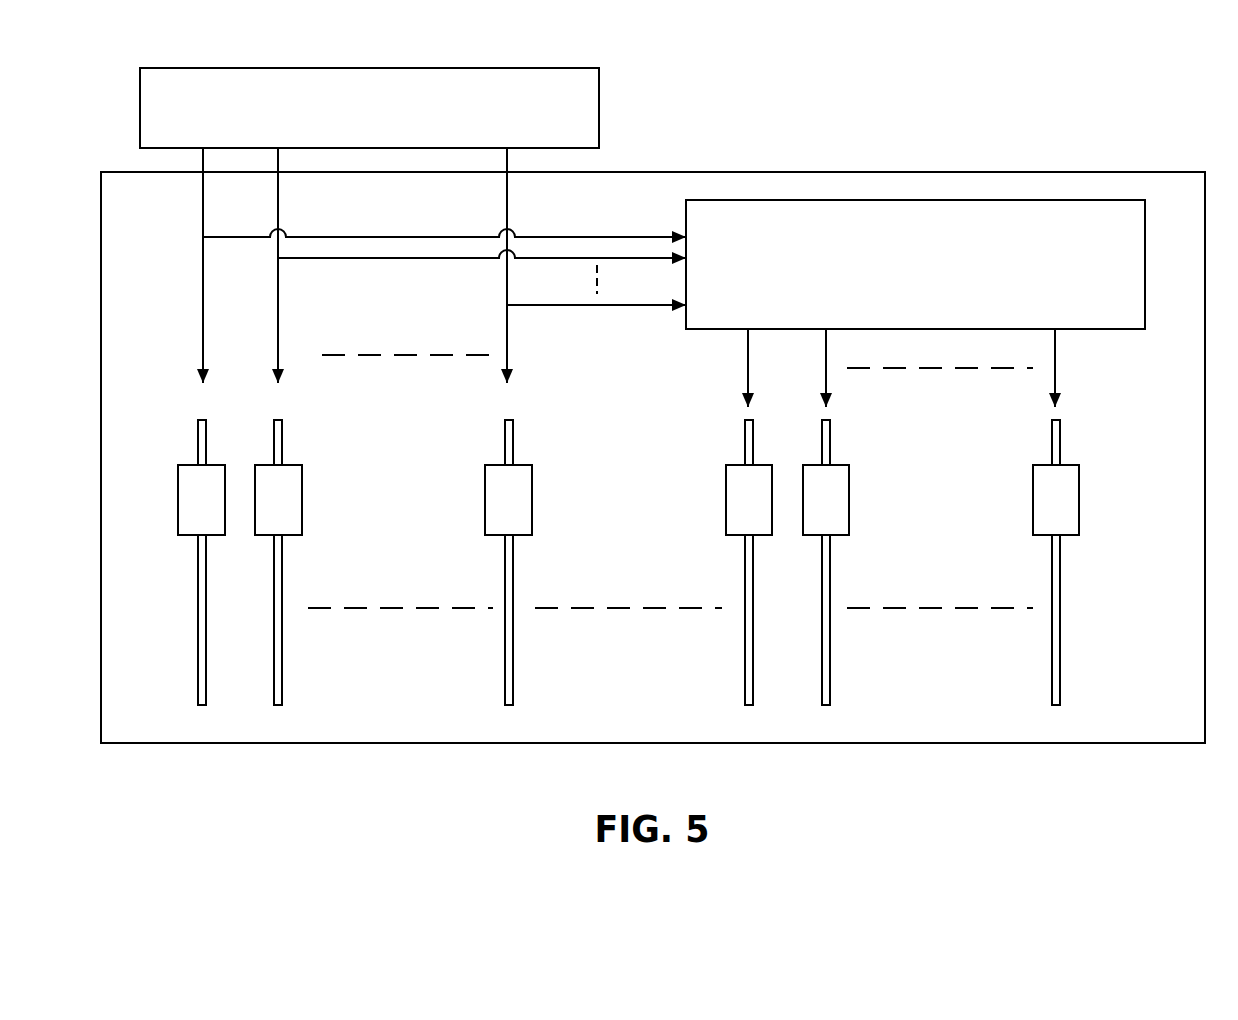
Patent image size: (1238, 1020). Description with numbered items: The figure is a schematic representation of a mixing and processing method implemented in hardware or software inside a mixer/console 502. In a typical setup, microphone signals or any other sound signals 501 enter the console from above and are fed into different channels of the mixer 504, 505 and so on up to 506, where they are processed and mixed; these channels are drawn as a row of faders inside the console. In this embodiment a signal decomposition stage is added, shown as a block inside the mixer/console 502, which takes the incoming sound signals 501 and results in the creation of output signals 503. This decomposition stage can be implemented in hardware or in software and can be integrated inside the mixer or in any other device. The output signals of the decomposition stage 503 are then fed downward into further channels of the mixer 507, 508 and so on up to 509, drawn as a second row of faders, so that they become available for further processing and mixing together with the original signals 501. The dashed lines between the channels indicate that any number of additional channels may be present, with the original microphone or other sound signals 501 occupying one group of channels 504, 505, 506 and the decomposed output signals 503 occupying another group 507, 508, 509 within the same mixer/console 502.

The microphone signals or other sound signals 501 is at (358, 67).
The mixer/console 502 is at (651, 170).
The signal decomposition stage and output signals 503 is at (1112, 330).
The mixer channel 504 is at (197, 630).
The mixer channel 505 is at (273, 628).
The mixer channel 506 is at (505, 630).
The mixer channel 507 is at (745, 630).
The mixer channel 508 is at (830, 637).
The mixer channel 509 is at (1060, 630).